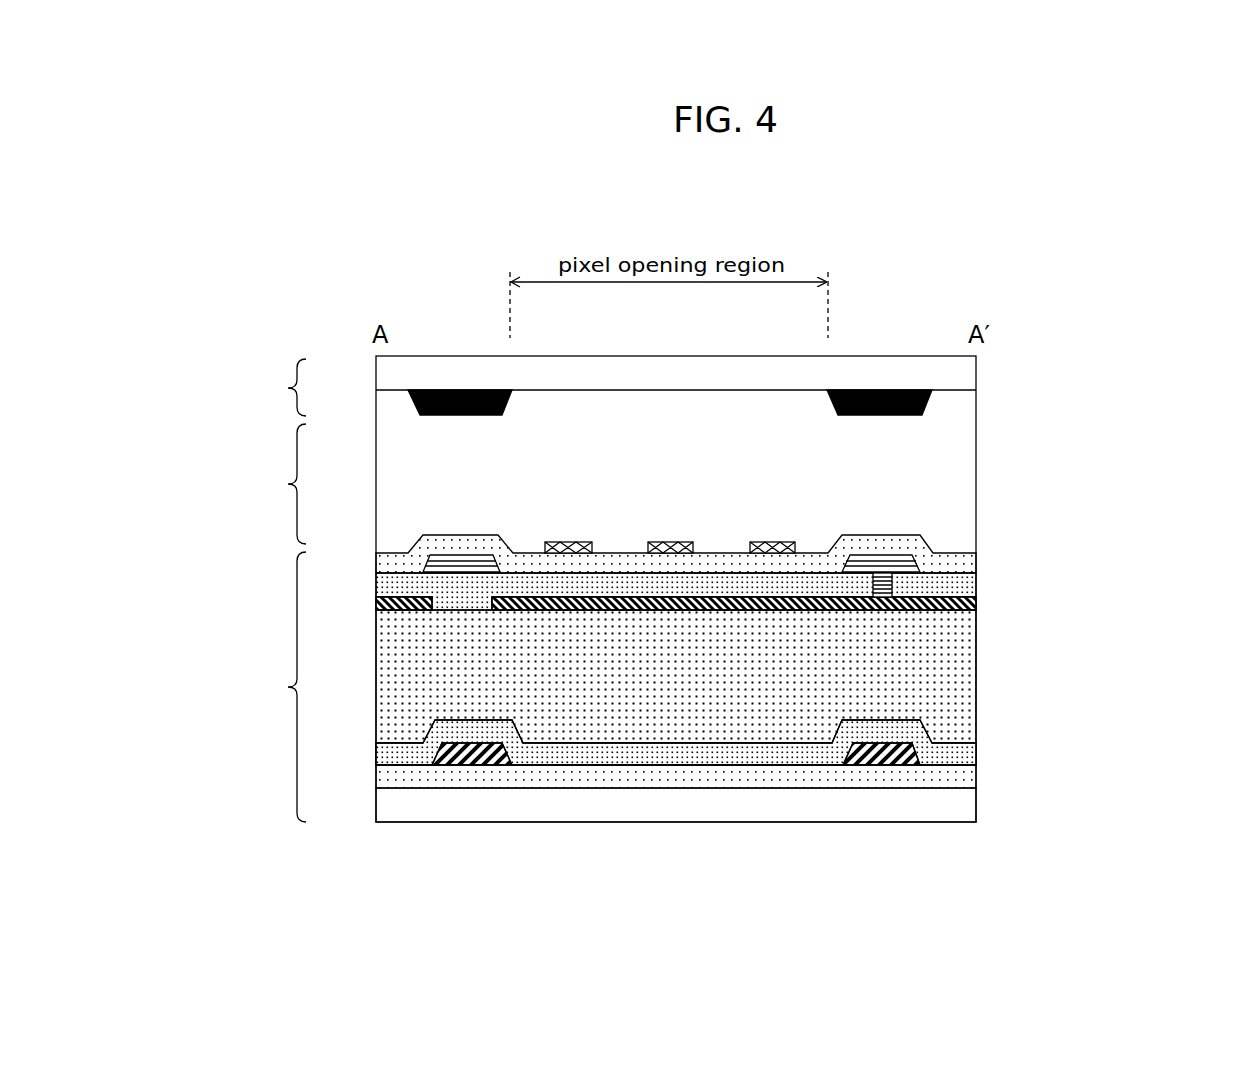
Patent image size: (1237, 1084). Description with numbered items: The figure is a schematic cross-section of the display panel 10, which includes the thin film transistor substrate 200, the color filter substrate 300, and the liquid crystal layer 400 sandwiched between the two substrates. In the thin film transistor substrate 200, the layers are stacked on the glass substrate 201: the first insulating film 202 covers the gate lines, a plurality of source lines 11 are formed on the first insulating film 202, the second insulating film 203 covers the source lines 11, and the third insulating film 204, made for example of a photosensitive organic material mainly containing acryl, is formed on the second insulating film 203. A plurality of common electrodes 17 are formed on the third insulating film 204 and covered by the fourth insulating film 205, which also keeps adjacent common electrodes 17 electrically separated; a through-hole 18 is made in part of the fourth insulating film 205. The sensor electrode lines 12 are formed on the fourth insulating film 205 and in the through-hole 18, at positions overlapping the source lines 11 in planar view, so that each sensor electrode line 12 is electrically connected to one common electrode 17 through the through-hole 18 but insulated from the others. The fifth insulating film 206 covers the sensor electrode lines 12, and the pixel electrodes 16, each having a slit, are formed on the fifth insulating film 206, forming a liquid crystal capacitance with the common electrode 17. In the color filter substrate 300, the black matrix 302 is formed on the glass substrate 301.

The display panel 10 is at (1103, 257).
The source line 11 is at (470, 757).
The sensor electrode line 12 is at (460, 562).
The pixel electrode 16 is at (750, 542).
The common electrode 17 is at (376, 604).
The through-hole 18 is at (895, 587).
The thin film transistor substrate 200 is at (273, 687).
The glass substrate 201 is at (970, 809).
The first insulating film 202 is at (970, 778).
The second insulating film 203 is at (970, 752).
The third insulating film 204 is at (970, 680).
The fourth insulating film 205 is at (970, 587).
The fifth insulating film 206 is at (970, 560).
The color filter substrate 300 is at (273, 387).
The glass substrate 301 is at (970, 375).
The black matrix 302 is at (453, 416).
The liquid crystal layer 400 is at (273, 484).